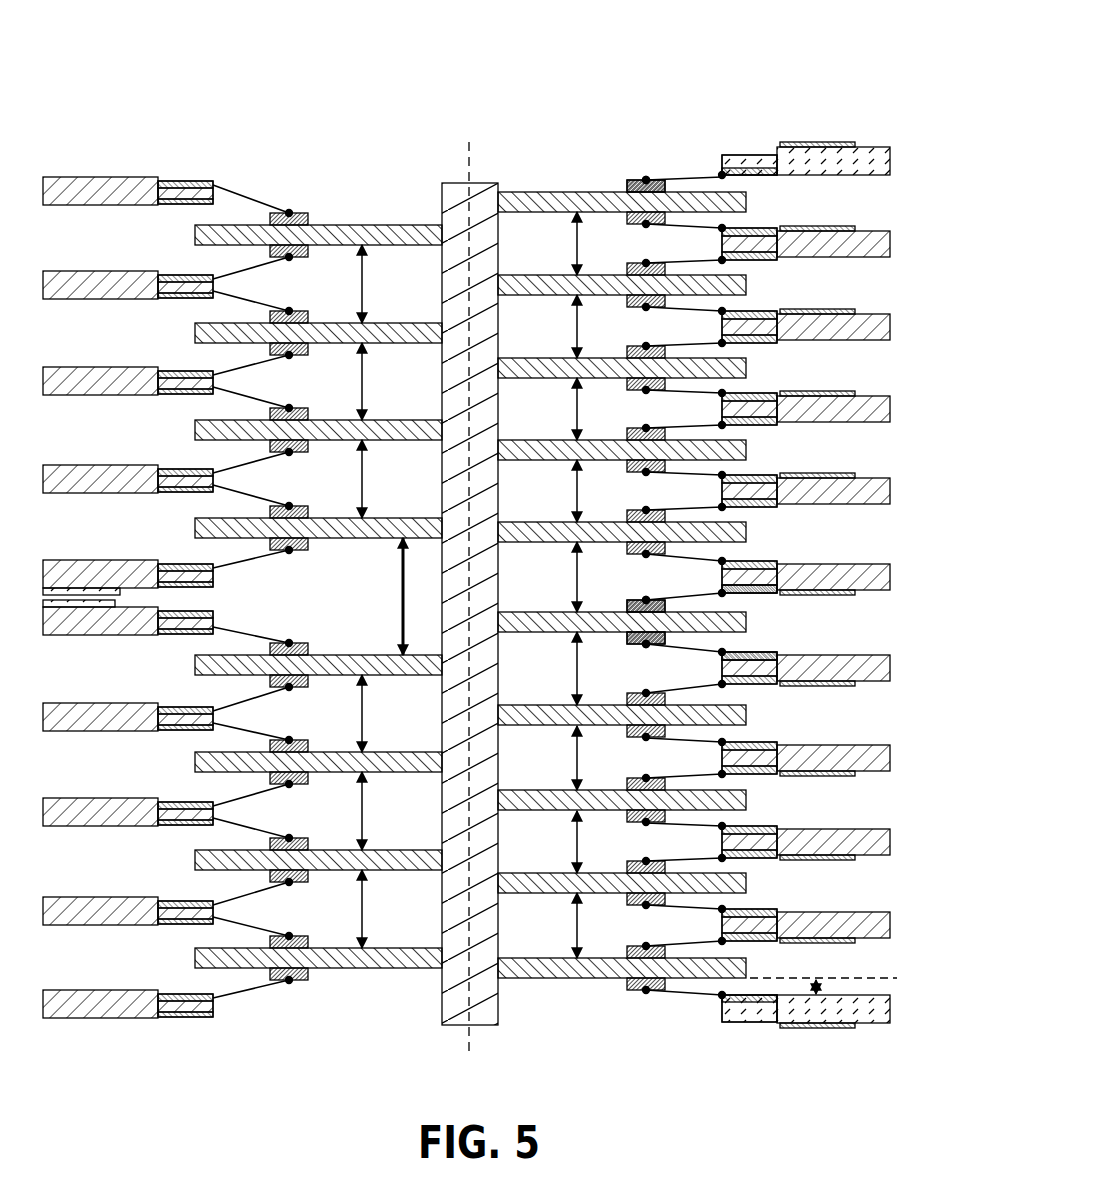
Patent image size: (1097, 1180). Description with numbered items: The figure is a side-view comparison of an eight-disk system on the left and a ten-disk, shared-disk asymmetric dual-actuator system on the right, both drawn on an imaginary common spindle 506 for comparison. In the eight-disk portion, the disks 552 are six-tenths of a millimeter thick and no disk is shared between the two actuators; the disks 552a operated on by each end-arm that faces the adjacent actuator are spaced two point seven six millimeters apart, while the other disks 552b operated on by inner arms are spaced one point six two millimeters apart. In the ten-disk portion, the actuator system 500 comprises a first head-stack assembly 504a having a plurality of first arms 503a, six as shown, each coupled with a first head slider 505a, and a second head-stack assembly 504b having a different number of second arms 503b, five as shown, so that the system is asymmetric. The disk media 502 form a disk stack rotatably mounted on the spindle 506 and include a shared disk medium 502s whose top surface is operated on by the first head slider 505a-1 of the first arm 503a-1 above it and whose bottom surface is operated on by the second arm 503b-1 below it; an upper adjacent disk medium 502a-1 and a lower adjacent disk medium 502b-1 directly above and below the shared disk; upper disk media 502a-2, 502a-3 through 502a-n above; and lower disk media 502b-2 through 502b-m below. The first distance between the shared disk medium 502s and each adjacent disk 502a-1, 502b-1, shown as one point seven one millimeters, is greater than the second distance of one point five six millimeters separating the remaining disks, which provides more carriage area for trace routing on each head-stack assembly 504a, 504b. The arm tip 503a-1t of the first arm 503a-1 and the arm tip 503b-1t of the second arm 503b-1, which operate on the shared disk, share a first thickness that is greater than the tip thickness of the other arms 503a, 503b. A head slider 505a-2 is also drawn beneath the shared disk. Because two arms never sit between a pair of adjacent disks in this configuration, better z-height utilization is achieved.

The actuator system 500 is at (790, 100).
The disk media 502 is at (520, 182).
The first head slider 505a is at (646, 174).
The disks of the 8-disk system 552 is at (425, 217).
The disks operated on by end-arms 552a is at (195, 523).
The other disks operated on by inner arms 552b is at (190, 220).
The upper disk medium n 502a-n is at (598, 213).
The upper disk medium 502a-3 is at (595, 358).
The upper disk medium 502a-2 is at (595, 440).
The upper adjacent disk medium 502a-1 is at (597, 522).
The shared disk medium 502s is at (600, 620).
The first head slider 505a-1 is at (646, 600).
The lower pad of center board 505a-2 is at (646, 644).
The lower adjacent disk medium 502b-1 is at (597, 726).
The lower disk medium 502b-2 is at (598, 811).
The lower disk medium m 502b-m is at (596, 958).
The first arm 503a-1 is at (846, 575).
The arm tip 503a-1t is at (770, 594).
The arm tip 503b-1t is at (770, 650).
The second arm 503b-1 is at (846, 653).
The first head-stack assembly 504a is at (809, 379).
The first arms 503a is at (809, 379).
The second head-stack assembly 504b is at (809, 827).
The second arms 503b is at (809, 827).
The spindle 506 is at (487, 1034).